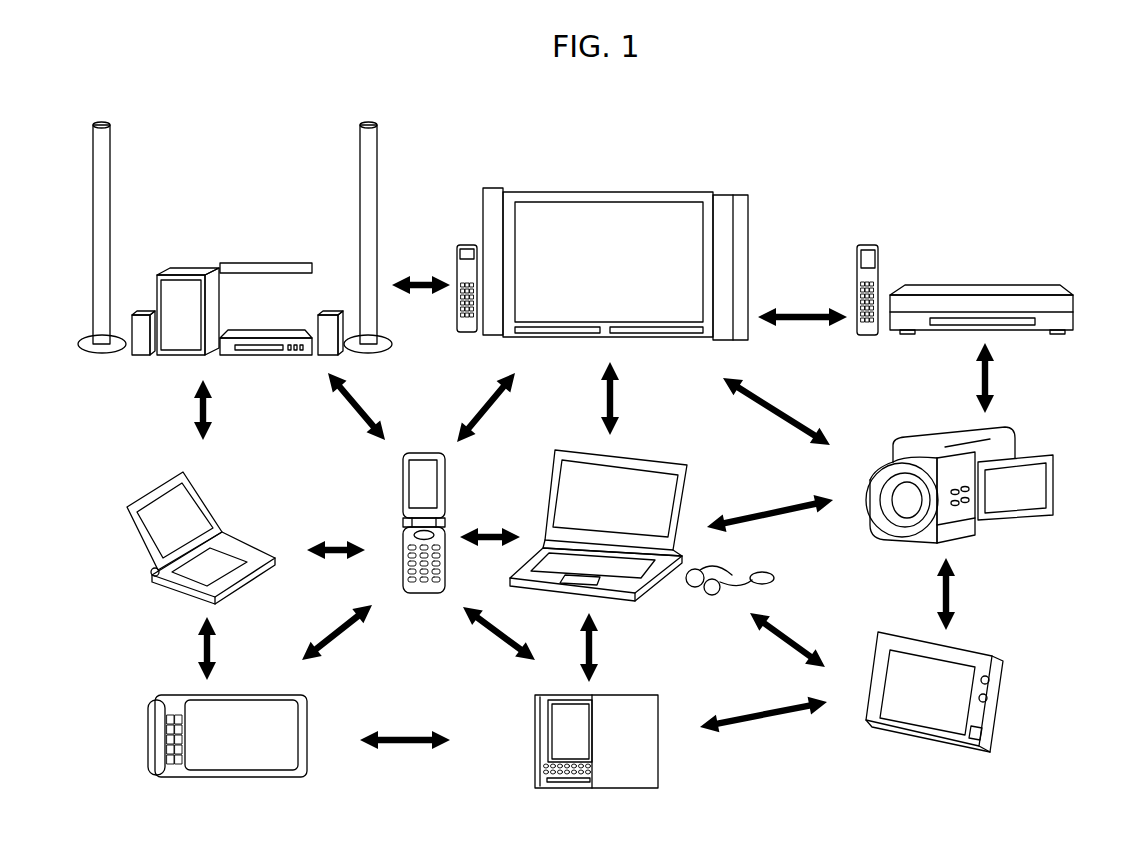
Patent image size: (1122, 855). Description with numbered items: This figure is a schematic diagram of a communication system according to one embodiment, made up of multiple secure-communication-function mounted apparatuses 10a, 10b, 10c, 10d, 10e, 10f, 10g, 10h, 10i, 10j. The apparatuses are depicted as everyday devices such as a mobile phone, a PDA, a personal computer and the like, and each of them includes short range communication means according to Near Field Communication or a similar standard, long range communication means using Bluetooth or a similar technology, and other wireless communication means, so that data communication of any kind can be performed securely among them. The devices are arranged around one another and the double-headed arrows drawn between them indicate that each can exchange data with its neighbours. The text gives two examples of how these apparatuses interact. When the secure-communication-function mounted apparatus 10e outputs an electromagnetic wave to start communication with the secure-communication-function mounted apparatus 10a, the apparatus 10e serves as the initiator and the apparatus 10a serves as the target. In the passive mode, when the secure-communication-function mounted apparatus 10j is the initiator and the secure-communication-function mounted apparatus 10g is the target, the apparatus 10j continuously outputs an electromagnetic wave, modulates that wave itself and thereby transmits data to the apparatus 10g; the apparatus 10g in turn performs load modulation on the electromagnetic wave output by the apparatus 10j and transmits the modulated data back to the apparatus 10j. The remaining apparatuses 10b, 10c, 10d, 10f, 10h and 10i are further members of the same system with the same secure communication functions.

The secure-communication-function mounted apparatus 10a is at (171, 364).
The secure-communication-function mounted apparatus 10b is at (131, 545).
The secure-communication-function mounted apparatus 10c is at (140, 742).
The secure-communication-function mounted apparatus 10d is at (600, 183).
The secure-communication-function mounted apparatus 10e is at (421, 450).
The secure-communication-function mounted apparatus 10f is at (637, 447).
The secure-communication-function mounted apparatus 10g is at (615, 685).
The secure-communication-function mounted apparatus 10h is at (985, 277).
The secure-communication-function mounted apparatus 10i is at (1030, 447).
The secure-communication-function mounted apparatus 10j is at (965, 636).